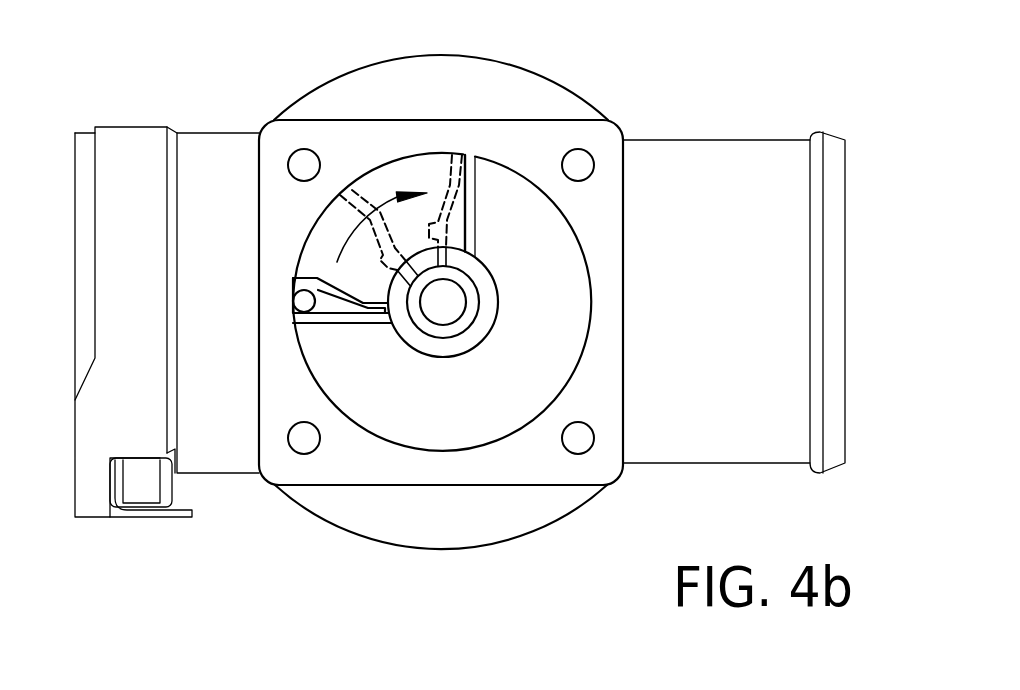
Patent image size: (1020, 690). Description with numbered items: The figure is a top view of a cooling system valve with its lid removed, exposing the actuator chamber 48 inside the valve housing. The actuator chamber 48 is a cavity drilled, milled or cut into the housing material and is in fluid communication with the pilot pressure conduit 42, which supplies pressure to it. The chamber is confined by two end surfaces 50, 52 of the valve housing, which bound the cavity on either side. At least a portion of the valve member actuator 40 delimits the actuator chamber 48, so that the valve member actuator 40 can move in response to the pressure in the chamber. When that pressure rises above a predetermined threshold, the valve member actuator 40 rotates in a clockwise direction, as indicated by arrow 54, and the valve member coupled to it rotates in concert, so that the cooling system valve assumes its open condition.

The valve member actuator 40 is at (310, 281).
The pilot pressure conduit 42 is at (303, 302).
The actuator chamber 48 is at (340, 305).
The end surface 50 is at (323, 315).
The end surface 52 is at (468, 200).
The arrow 54 is at (393, 183).